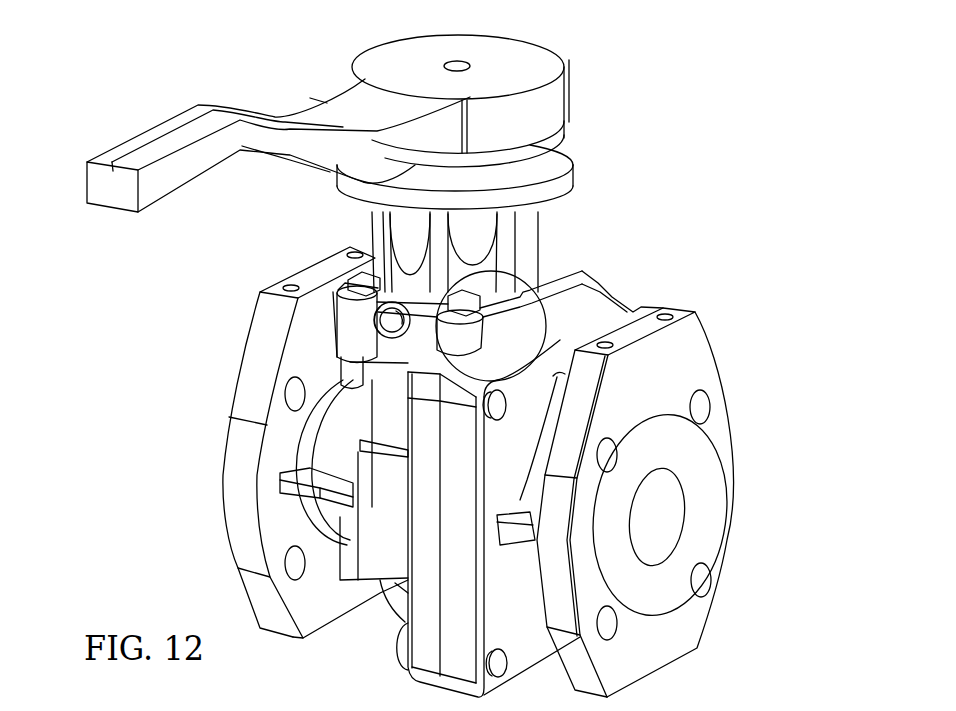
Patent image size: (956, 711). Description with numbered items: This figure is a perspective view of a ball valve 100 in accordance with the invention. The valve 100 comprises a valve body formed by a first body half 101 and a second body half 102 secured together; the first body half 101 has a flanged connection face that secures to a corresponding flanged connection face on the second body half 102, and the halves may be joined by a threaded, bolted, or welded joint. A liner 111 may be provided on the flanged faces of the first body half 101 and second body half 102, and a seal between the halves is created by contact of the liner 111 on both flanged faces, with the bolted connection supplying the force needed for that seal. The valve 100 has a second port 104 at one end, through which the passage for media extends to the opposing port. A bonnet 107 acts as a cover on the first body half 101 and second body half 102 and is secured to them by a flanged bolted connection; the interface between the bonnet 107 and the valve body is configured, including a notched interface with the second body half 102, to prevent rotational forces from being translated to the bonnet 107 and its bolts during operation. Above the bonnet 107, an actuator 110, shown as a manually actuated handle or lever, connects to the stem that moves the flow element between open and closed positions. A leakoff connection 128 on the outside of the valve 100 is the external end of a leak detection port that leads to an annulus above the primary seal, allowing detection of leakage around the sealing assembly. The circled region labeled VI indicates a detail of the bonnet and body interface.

The valve 100 is at (184, 70).
The actuator 110 is at (175, 170).
The bonnet 107 is at (530, 240).
The detail view VI is at (537, 297).
The first body half 101 is at (255, 403).
The second body half 102 is at (580, 322).
The leakoff connection 128 is at (390, 323).
The liner 111 is at (695, 462).
The second port 104 is at (658, 524).